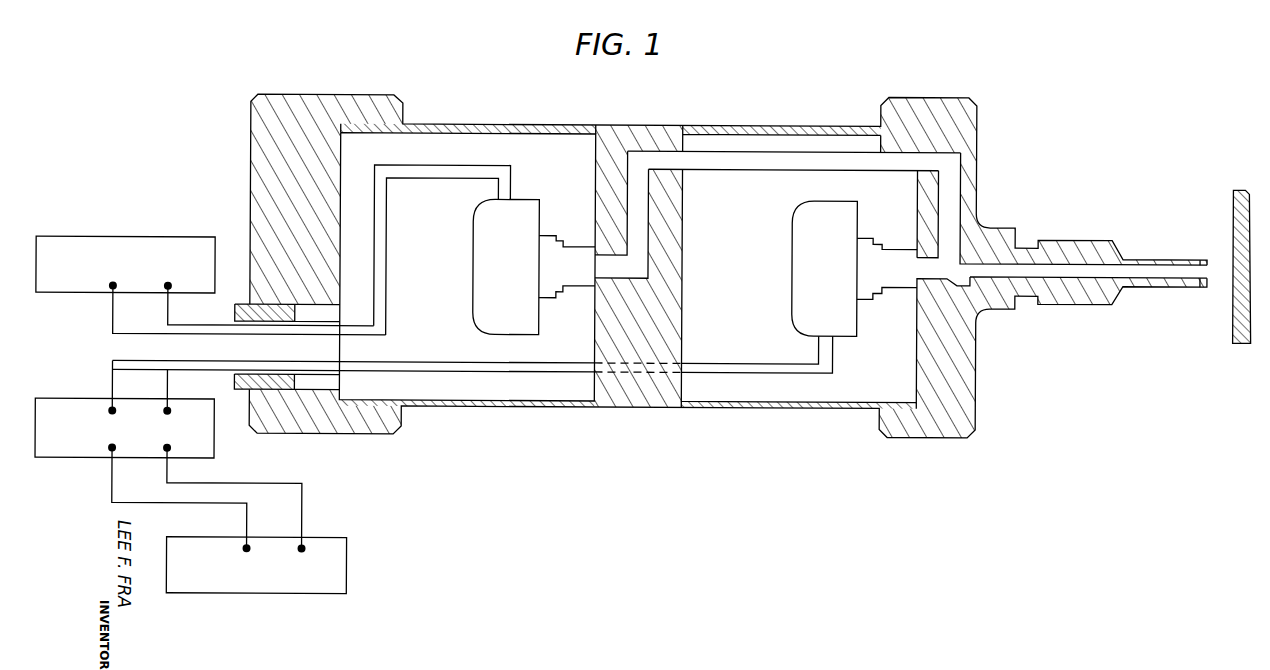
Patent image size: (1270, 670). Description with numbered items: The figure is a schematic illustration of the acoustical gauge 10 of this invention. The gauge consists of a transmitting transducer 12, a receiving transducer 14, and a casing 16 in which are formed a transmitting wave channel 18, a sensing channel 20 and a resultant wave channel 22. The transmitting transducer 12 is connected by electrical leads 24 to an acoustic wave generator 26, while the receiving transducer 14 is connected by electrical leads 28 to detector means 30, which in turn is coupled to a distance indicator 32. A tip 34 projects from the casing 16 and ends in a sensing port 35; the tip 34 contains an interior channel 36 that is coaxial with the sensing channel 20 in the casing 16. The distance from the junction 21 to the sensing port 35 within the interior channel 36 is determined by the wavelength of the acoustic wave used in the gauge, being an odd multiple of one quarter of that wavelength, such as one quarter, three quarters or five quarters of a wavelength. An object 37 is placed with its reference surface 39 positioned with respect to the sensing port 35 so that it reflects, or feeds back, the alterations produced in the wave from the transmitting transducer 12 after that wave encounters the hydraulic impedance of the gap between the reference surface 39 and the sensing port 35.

The acoustical gauge 10 is at (665, 274).
The transmitting transducer 12 is at (489, 303).
The receiving transducer 14 is at (810, 322).
The casing 16 is at (962, 392).
The transmitting wave channel 18 is at (807, 151).
The sensing channel 20 is at (1075, 268).
The junction 21 is at (957, 262).
The resultant wave channel 22 is at (923, 270).
The electrical leads 24 is at (376, 253).
The acoustic wave generator 26 is at (97, 238).
The electrical leads 28 is at (520, 373).
The detector means 30 is at (75, 399).
The distance indicator 32 is at (348, 589).
The tip 34 is at (1145, 282).
The sensing port 35 is at (1207, 275).
The interior channel 36 is at (1165, 270).
The object 37 is at (1239, 187).
The reference surface 39 is at (1232, 222).